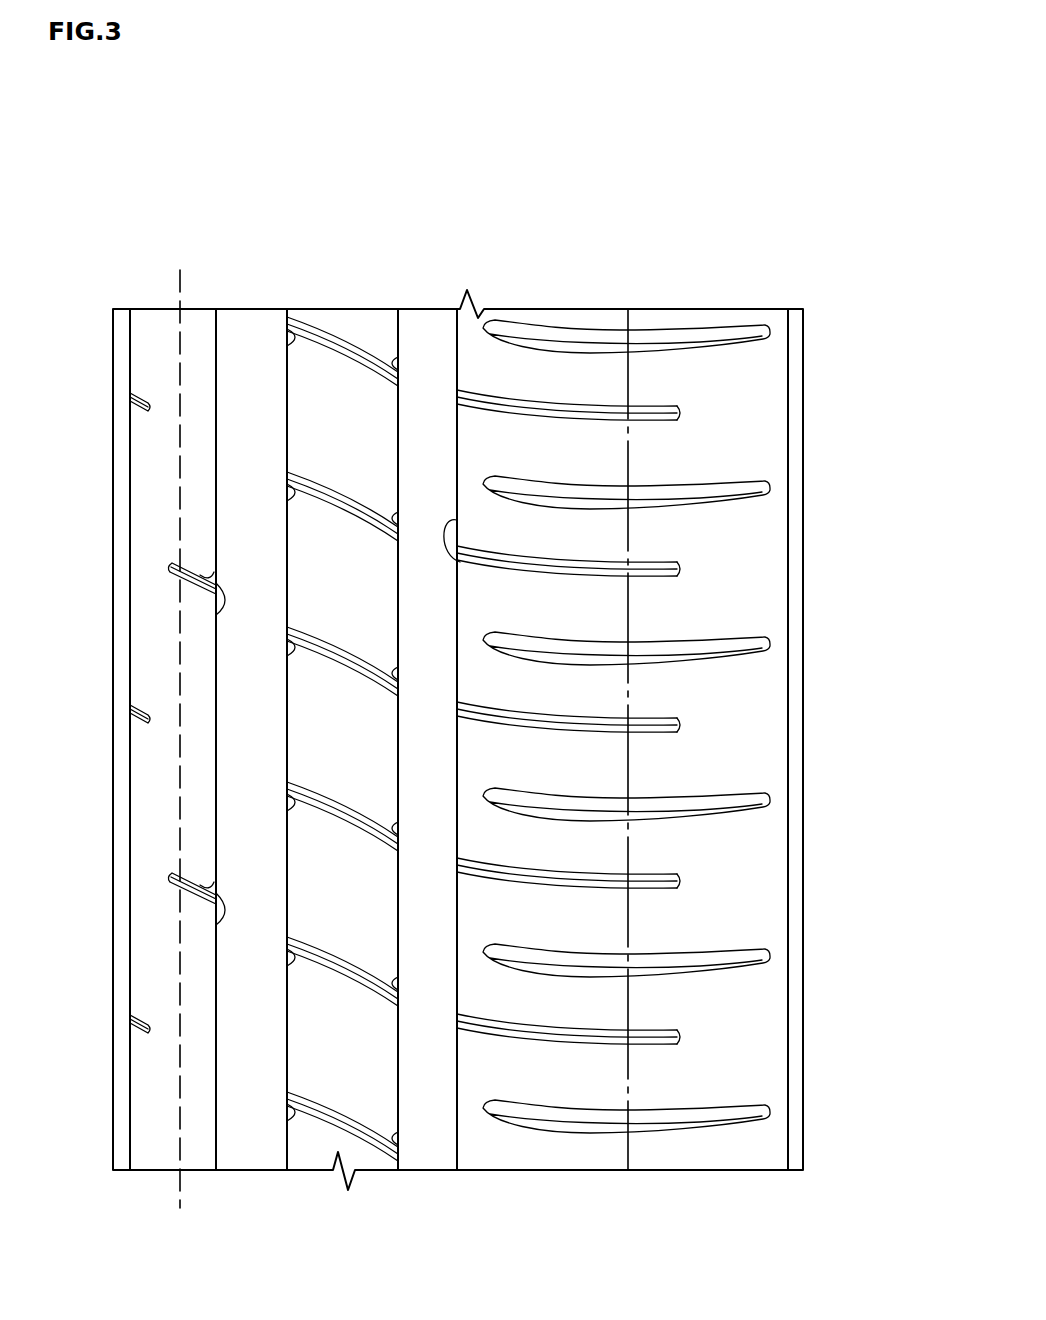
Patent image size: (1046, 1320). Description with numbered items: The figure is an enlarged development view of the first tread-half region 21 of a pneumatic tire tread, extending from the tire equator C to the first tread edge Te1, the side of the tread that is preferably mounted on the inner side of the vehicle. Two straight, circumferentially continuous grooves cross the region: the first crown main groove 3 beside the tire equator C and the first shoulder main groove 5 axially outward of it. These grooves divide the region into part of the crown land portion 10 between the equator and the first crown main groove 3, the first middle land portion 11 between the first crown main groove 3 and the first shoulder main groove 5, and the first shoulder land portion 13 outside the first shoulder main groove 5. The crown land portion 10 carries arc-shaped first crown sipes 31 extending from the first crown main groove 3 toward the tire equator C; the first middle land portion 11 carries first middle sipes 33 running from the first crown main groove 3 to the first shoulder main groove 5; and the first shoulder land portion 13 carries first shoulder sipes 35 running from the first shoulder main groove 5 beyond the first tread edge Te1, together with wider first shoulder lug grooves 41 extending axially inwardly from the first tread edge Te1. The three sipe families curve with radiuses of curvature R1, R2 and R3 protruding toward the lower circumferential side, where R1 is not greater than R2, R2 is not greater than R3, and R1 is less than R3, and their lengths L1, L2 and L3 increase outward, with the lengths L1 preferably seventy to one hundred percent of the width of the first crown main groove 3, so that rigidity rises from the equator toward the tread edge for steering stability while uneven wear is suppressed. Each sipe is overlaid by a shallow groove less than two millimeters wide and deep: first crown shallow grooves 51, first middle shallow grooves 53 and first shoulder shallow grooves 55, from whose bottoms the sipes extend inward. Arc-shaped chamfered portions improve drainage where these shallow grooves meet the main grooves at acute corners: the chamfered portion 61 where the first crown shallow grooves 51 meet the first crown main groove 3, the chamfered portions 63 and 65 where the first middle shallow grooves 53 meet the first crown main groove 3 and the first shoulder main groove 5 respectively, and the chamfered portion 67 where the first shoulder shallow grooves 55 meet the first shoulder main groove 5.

The tire equator C is at (180, 300).
The crown land portion 10 is at (199, 336).
The first crown main groove 3 is at (254, 337).
The first middle shallow grooves 53 is at (320, 330).
The first middle land portion 11 is at (373, 328).
The first shoulder main groove 5 is at (423, 327).
The chamfered portion 65 is at (433, 525).
The first shoulder land portion 13 is at (550, 326).
The first tread-half region 21 is at (607, 243).
The first tread edge Te1 is at (628, 316).
The chamfered portion 63 is at (287, 488).
The lengths of the first crown sipes L1 is at (217, 585).
The chamfered portion 67 is at (457, 520).
The first shoulder shallow grooves 55 is at (585, 578).
The lengths of the first middle sipes L2 is at (412, 658).
The lengths of the first shoulder sipes L3 is at (628, 728).
The radius of curvature of the first crown sipes R1 is at (195, 883).
The radius of curvature of the first middle sipes R2 is at (322, 963).
The radius of curvature of the first shoulder sipes R3 is at (517, 1033).
The first crown sipes 31 is at (172, 873).
The first crown shallow grooves 51 is at (187, 893).
The chamfered portion 61 is at (227, 912).
The first shoulder lug grooves 41 is at (605, 963).
The first middle sipes 33 is at (343, 983).
The first shoulder sipes 35 is at (563, 1040).